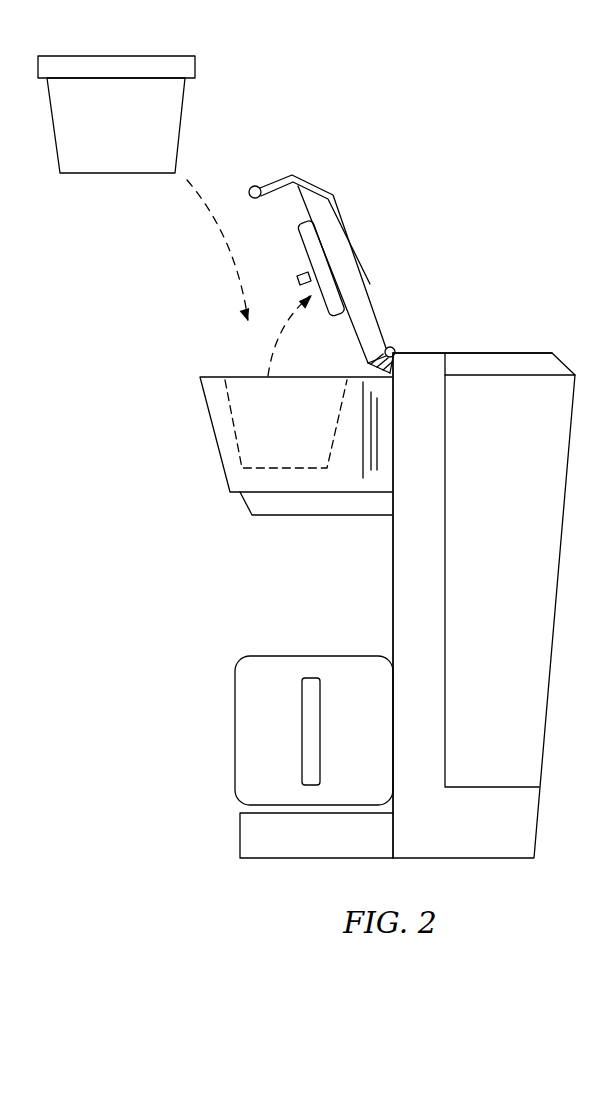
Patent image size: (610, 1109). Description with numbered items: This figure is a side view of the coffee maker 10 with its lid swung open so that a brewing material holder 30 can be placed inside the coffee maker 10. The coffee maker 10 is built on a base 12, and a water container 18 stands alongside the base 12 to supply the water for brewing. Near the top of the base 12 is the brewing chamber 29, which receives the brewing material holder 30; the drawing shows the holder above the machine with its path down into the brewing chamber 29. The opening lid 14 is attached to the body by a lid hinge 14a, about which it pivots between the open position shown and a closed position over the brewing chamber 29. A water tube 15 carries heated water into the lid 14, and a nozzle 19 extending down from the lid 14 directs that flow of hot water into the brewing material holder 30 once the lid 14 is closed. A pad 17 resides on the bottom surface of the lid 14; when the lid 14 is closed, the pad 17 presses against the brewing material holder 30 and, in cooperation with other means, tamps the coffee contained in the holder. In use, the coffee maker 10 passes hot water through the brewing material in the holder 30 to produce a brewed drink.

The coffee maker 10 is at (507, 298).
The base 12 is at (412, 466).
The opening lid 14 is at (362, 307).
The lid hinge 14a is at (394, 345).
The water tube 15 is at (396, 364).
The pad 17 is at (308, 243).
The water container 18 is at (486, 523).
The nozzle 19 is at (297, 276).
The brewing chamber 29 is at (264, 426).
The brewing material holder 30 is at (104, 130).